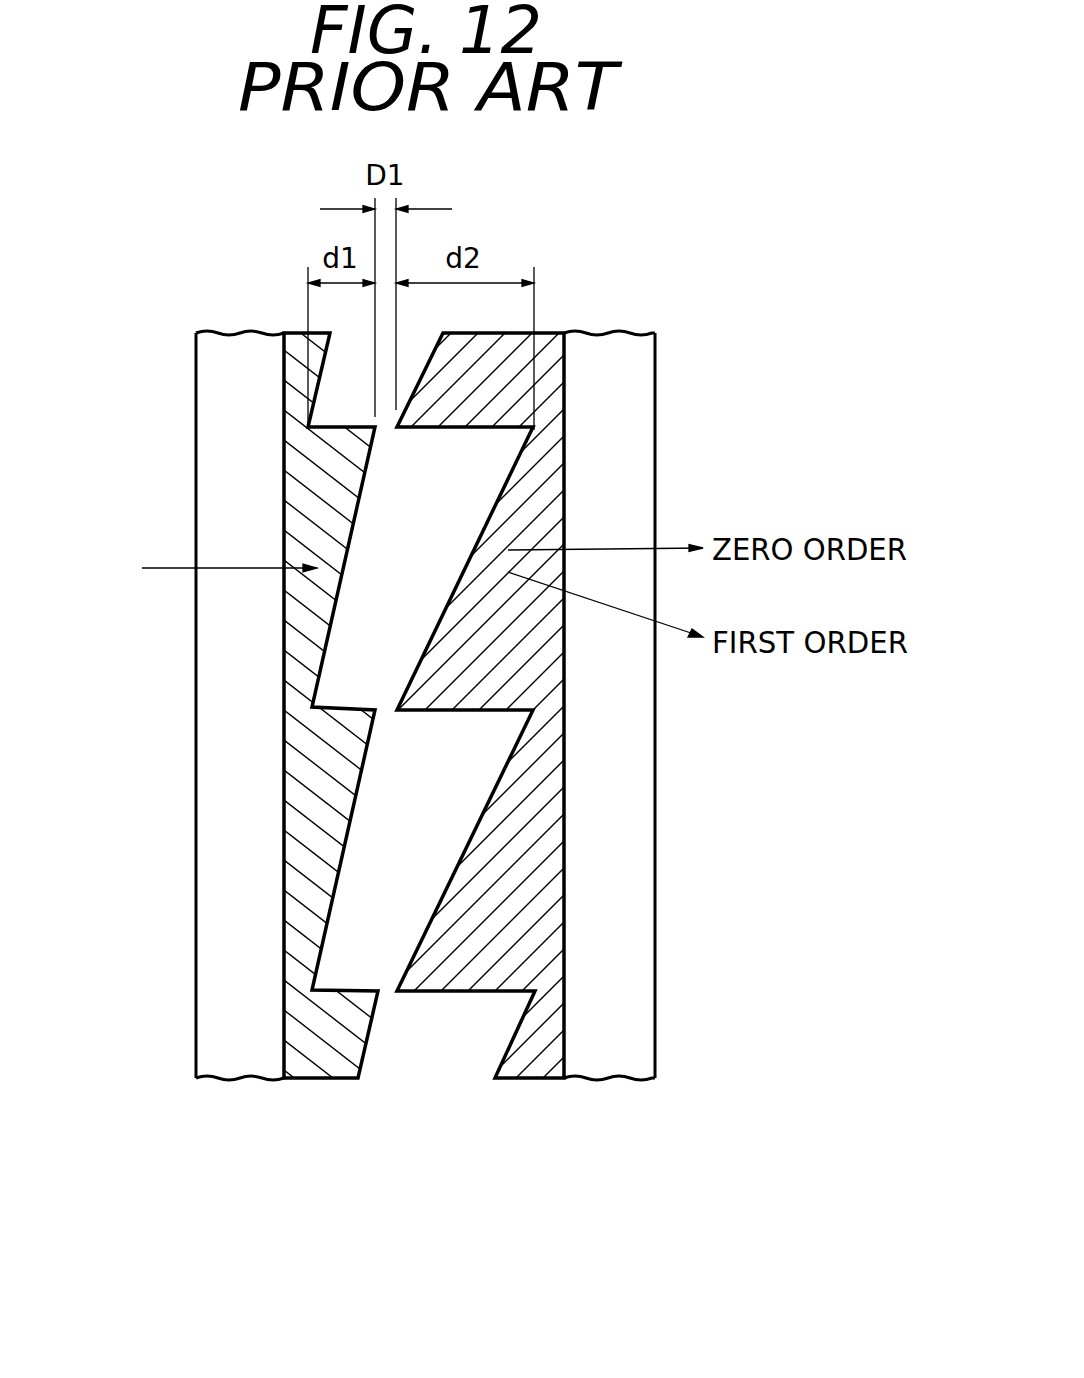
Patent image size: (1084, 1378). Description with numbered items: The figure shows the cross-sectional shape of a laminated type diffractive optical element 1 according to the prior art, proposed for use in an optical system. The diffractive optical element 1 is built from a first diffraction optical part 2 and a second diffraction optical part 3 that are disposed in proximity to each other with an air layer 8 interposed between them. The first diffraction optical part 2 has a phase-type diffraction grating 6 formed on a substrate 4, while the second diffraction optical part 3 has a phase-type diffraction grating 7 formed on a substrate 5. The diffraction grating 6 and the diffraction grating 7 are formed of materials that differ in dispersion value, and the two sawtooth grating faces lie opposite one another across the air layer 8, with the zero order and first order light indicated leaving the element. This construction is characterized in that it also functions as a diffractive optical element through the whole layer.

The diffractive optical element 1 is at (425, 730).
The first diffraction optical part 2 is at (287, 740).
The second diffraction optical part 3 is at (526, 695).
The substrate 4 is at (240, 1066).
The substrate 5 is at (609, 739).
The diffraction grating 6 is at (331, 704).
The diffraction grating 7 is at (523, 1066).
The air layer 8 is at (477, 480).